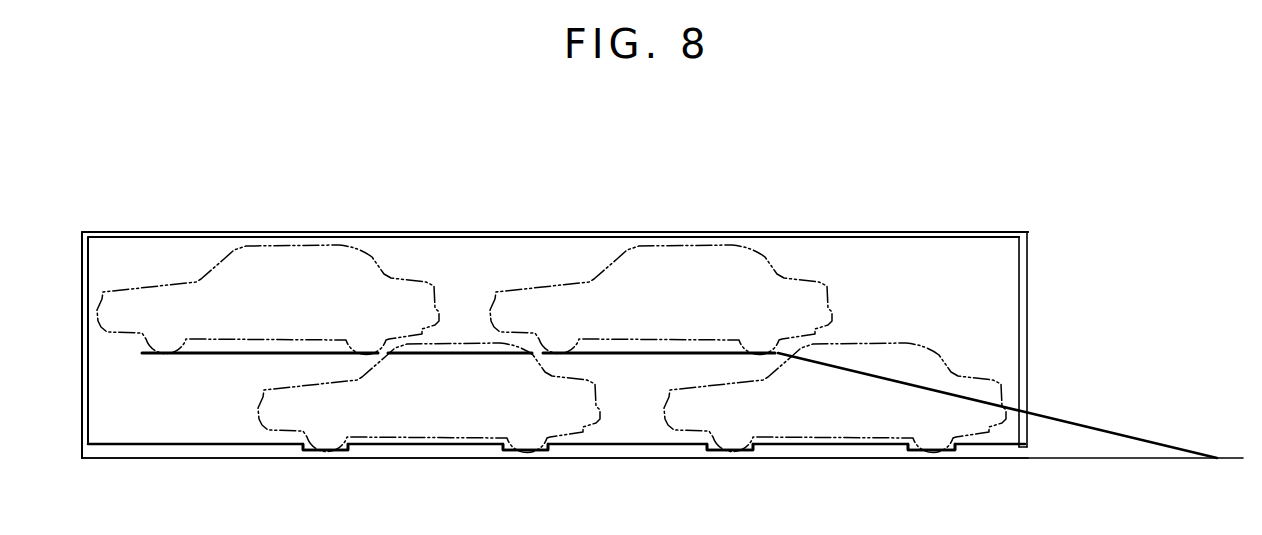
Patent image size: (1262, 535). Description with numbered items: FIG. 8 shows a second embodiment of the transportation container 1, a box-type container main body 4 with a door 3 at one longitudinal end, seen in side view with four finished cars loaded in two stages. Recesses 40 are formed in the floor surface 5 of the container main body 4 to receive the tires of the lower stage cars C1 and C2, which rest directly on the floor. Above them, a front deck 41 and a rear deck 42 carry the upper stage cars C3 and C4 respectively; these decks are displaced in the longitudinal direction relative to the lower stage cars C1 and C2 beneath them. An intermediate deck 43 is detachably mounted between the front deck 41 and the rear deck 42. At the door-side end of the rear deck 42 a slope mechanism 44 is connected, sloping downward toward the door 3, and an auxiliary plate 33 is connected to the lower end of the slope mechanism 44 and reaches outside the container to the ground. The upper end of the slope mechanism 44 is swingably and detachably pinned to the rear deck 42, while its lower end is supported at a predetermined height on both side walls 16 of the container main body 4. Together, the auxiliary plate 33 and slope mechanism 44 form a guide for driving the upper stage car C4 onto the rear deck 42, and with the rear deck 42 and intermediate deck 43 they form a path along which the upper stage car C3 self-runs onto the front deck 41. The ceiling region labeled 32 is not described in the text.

The container 1 is at (684, 222).
The door 3 is at (1029, 298).
The container main body 4 is at (332, 224).
The floor surface 5 is at (219, 440).
The side walls 16 is at (145, 440).
The ceiling panel 32 is at (523, 234).
The auxiliary plate 33 is at (1118, 434).
The recesses 40 is at (343, 452).
The front deck 41 is at (209, 355).
The rear deck 42 is at (638, 355).
The intermediate deck 43 is at (447, 355).
The slope mechanism 44 is at (882, 380).
The first car C1 is at (410, 445).
The second car C2 is at (818, 445).
The upper stage car C3 is at (374, 265).
The upper stage car C4 is at (778, 276).